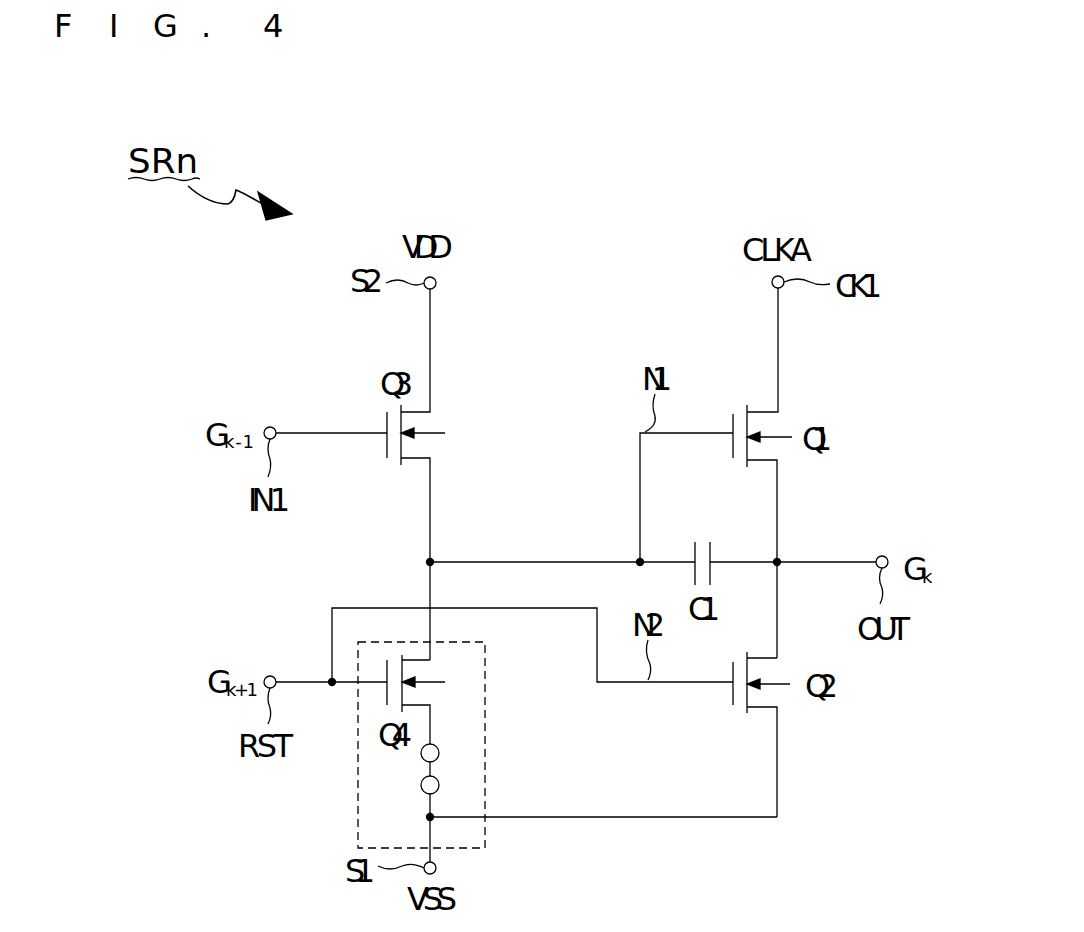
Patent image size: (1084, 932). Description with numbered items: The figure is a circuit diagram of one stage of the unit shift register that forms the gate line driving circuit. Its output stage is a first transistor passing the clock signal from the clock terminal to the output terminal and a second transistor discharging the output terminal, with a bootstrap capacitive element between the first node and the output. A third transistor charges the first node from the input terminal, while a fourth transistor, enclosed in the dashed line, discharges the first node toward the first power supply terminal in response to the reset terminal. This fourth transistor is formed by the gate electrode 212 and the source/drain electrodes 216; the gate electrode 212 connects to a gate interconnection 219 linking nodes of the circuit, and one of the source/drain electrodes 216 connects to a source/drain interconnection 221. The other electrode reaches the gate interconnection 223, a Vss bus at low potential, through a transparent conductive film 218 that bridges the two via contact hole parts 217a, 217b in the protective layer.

The gate electrode 212 is at (378, 690).
The source/drain electrodes 216 is at (445, 652).
The contact hole part 217a is at (441, 752).
The contact hole part 217b is at (441, 790).
The transparent conductive film 218 is at (413, 773).
The gate interconnection 219 is at (323, 650).
The source/drain interconnection 221 is at (440, 553).
The gate interconnection 223 is at (440, 823).